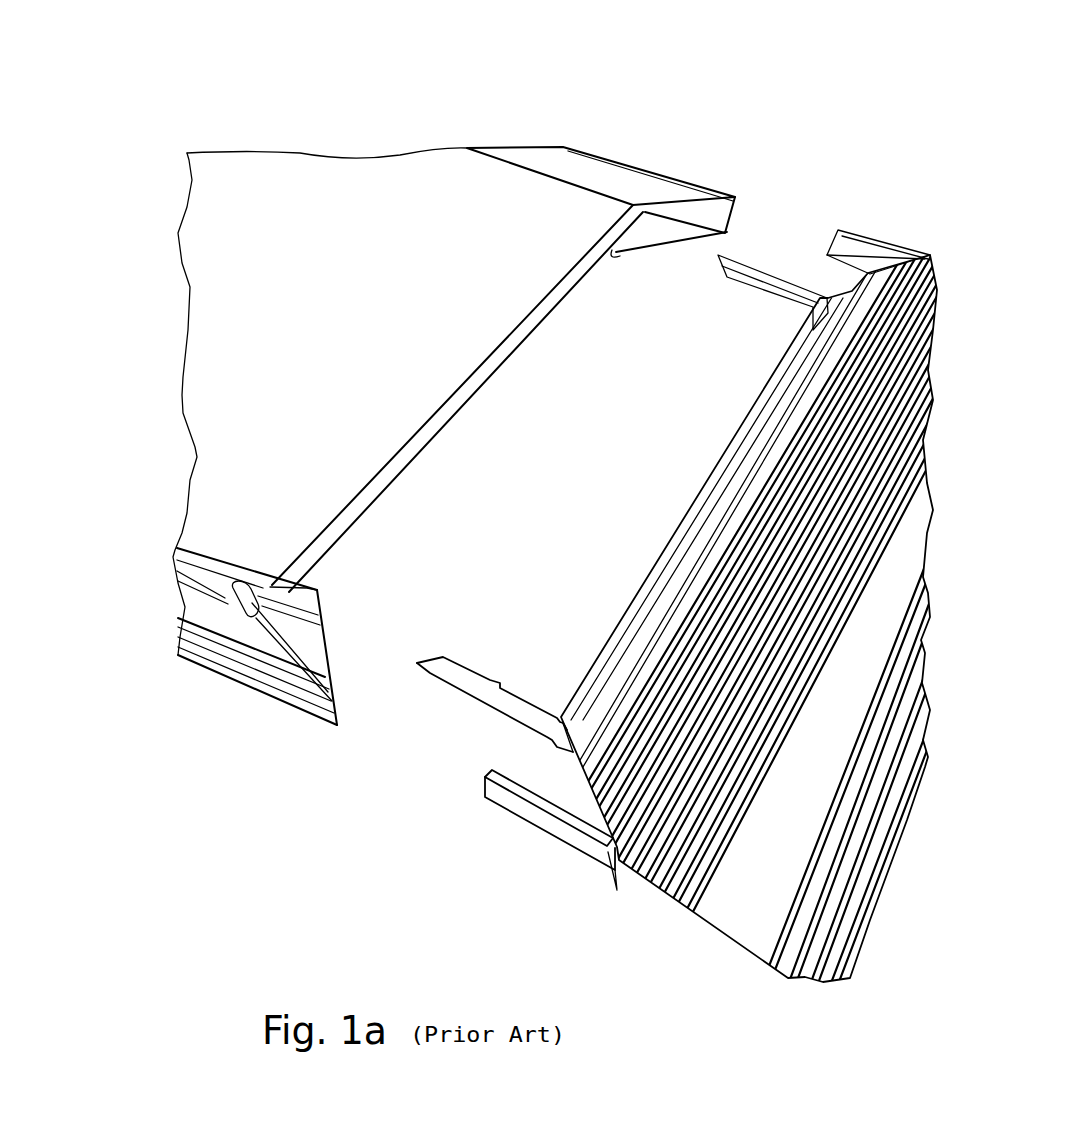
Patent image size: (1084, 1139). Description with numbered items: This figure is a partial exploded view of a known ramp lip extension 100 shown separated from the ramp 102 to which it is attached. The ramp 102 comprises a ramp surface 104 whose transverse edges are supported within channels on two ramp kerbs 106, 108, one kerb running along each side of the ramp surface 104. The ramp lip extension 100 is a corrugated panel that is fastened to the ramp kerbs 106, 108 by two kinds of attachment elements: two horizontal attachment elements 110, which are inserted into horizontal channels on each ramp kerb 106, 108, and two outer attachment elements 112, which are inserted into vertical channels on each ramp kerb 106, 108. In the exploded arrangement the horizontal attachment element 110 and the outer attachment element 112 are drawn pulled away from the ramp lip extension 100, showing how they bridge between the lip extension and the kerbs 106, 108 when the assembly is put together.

The ramp lip extension 100 is at (806, 908).
The ramp 102 is at (364, 128).
The ramp surface 104 is at (228, 317).
The ramp kerb 106 is at (190, 598).
The ramp kerb 108 is at (533, 147).
The horizontal attachment element 110 is at (467, 662).
The outer attachment element 112 is at (507, 800).